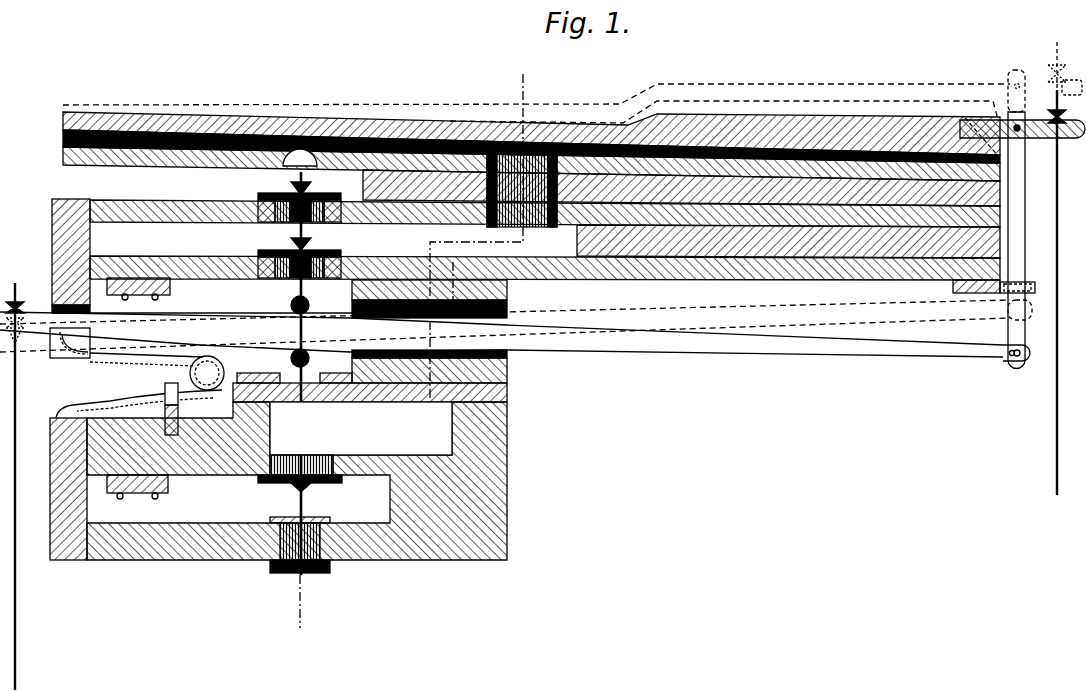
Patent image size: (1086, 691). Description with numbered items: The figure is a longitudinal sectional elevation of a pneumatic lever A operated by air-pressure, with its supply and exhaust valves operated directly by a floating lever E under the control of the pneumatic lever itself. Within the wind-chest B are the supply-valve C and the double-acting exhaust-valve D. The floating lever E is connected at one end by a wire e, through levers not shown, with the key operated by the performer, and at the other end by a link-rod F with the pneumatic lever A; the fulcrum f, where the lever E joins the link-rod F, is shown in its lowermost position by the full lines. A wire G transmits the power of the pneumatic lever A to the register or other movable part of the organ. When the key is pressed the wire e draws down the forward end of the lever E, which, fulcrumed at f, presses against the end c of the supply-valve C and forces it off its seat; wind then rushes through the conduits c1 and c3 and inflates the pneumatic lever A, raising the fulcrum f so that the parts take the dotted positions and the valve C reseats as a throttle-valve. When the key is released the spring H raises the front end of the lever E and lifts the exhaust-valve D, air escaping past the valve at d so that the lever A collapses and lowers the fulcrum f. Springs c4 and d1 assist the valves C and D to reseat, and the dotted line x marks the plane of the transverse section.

The pneumatic lever A is at (648, 120).
The wind-chest B is at (278, 471).
The supply-valve C is at (300, 514).
The double-acting exhaust-valve D is at (322, 252).
The floating lever E is at (516, 330).
The link-rod F is at (1025, 222).
The wire G is at (1058, 347).
The spring H is at (122, 372).
The end of the air-supply valve c is at (307, 360).
The conduit c1 is at (361, 428).
The conduit c3 is at (530, 226).
The spring c4 is at (170, 483).
The exhaust-valve seat d is at (266, 196).
The spring d1 is at (224, 297).
The wire e is at (12, 486).
The fulcrum f is at (1022, 362).
The section line x is at (407, 352).